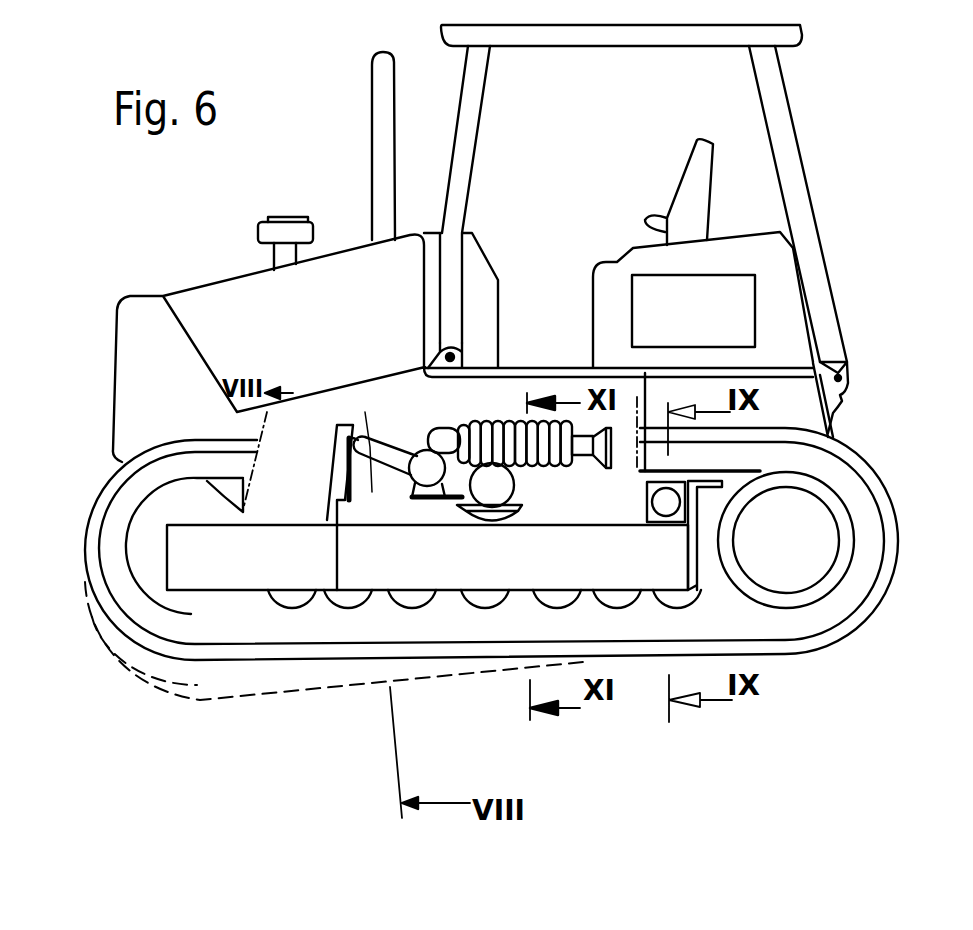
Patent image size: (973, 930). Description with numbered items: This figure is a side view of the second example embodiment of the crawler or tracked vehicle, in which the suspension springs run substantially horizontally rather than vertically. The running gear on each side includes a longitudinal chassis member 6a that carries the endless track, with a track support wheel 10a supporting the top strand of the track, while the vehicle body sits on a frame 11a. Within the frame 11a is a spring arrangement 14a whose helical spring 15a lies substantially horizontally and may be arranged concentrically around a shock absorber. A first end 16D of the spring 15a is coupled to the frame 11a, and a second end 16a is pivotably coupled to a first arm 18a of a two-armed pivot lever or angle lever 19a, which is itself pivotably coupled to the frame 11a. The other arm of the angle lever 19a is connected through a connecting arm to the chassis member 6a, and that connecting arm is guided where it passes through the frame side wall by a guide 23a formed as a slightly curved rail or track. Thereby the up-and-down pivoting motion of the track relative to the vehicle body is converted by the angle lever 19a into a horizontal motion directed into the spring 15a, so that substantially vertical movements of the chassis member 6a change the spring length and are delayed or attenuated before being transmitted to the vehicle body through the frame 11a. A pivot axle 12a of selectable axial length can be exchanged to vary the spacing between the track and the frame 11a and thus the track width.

The chassis member 6a is at (250, 573).
The track support wheel 10a is at (493, 487).
The frame 11a is at (805, 415).
The pivot axle 12a is at (663, 507).
The spring arrangement 14a is at (502, 417).
The helical spring 15a is at (497, 450).
The second end of the spring 16a is at (458, 430).
The first end of the spring 16D is at (583, 453).
The first arm 18a is at (424, 458).
The angle lever 19a is at (358, 712).
The guide 23a is at (327, 472).